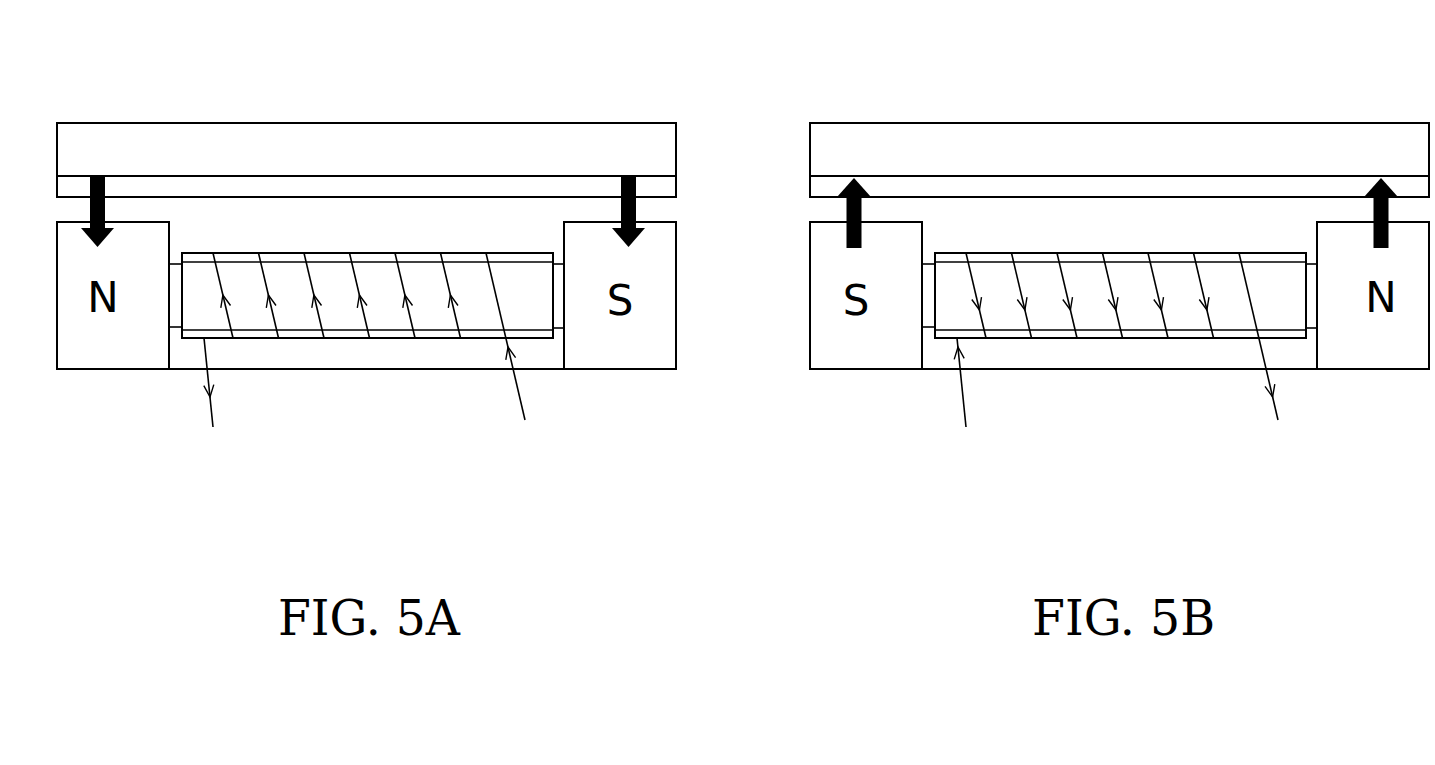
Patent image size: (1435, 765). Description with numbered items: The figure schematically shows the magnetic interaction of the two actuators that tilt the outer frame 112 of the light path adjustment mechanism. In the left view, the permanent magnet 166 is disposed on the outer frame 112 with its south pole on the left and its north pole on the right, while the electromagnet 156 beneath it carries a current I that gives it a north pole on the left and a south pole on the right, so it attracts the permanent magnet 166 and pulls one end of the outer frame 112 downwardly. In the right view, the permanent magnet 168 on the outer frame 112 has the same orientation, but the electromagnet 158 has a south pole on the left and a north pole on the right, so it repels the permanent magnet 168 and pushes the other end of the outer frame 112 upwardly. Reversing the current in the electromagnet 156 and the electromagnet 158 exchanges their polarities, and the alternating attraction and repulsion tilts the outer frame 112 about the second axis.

In FIG. 5A, the outer frame 112 is at (252, 187).
In FIG. 5B, the outer frame 112 is at (970, 188).
In FIG. 5A, the permanent magnet 166 is at (365, 138).
In FIG. 5B, the permanent magnet 168 is at (1115, 138).
In FIG. 5A, the electromagnet 156 is at (352, 338).
In FIG. 5B, the electromagnet 158 is at (1105, 338).